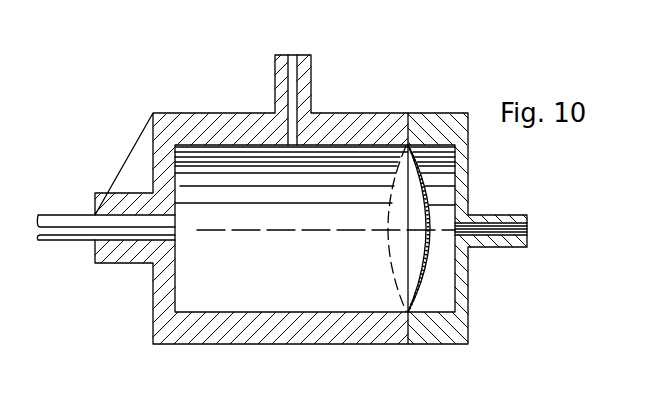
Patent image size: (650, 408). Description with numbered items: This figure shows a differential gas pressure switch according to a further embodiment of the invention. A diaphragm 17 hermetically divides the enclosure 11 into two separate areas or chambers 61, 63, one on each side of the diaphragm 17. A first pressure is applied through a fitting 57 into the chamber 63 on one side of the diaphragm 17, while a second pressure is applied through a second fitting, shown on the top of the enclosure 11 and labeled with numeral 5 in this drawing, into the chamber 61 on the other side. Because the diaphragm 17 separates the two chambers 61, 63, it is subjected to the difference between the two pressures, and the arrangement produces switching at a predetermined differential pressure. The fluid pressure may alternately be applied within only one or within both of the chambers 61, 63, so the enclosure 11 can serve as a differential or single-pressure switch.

The enclosure 11 is at (190, 113).
The pressure port P2 5 is at (297, 64).
The fitting 57 is at (527, 230).
The chamber 61 is at (197, 312).
The chamber 63 is at (430, 312).
The diaphragm 17 is at (406, 299).